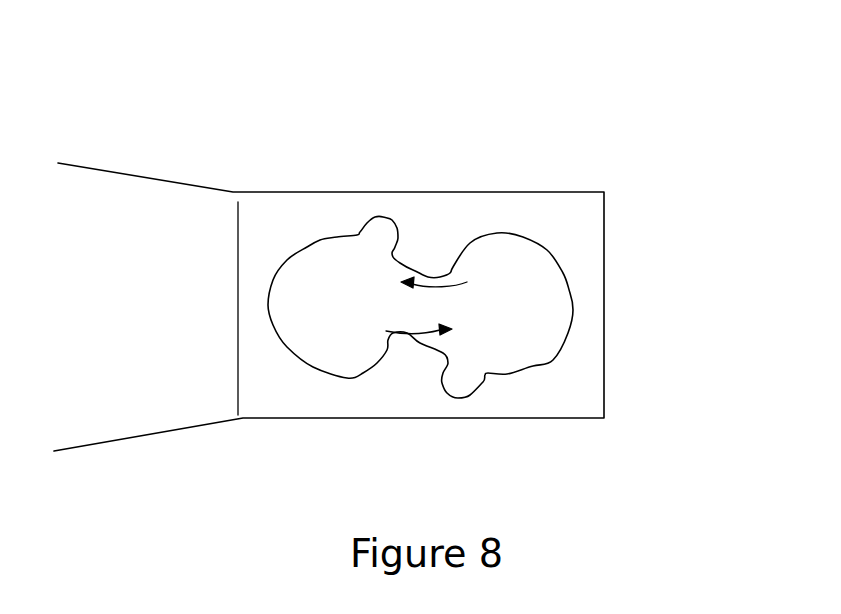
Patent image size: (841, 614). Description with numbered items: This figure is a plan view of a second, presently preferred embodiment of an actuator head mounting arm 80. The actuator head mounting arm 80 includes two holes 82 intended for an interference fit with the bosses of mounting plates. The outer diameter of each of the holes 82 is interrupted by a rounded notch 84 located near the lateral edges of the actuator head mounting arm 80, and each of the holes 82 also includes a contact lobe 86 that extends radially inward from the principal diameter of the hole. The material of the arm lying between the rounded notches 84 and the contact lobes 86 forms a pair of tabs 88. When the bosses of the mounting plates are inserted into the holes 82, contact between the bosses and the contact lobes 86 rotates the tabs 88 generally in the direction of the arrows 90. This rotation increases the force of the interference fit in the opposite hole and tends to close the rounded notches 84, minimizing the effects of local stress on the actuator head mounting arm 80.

The actuator head mounting arm 80 is at (288, 95).
The holes 82 is at (270, 314).
The rounded notch 84 is at (387, 215).
The contact lobe 86 is at (450, 276).
The tabs 88 is at (423, 248).
The arrows 90 is at (398, 322).